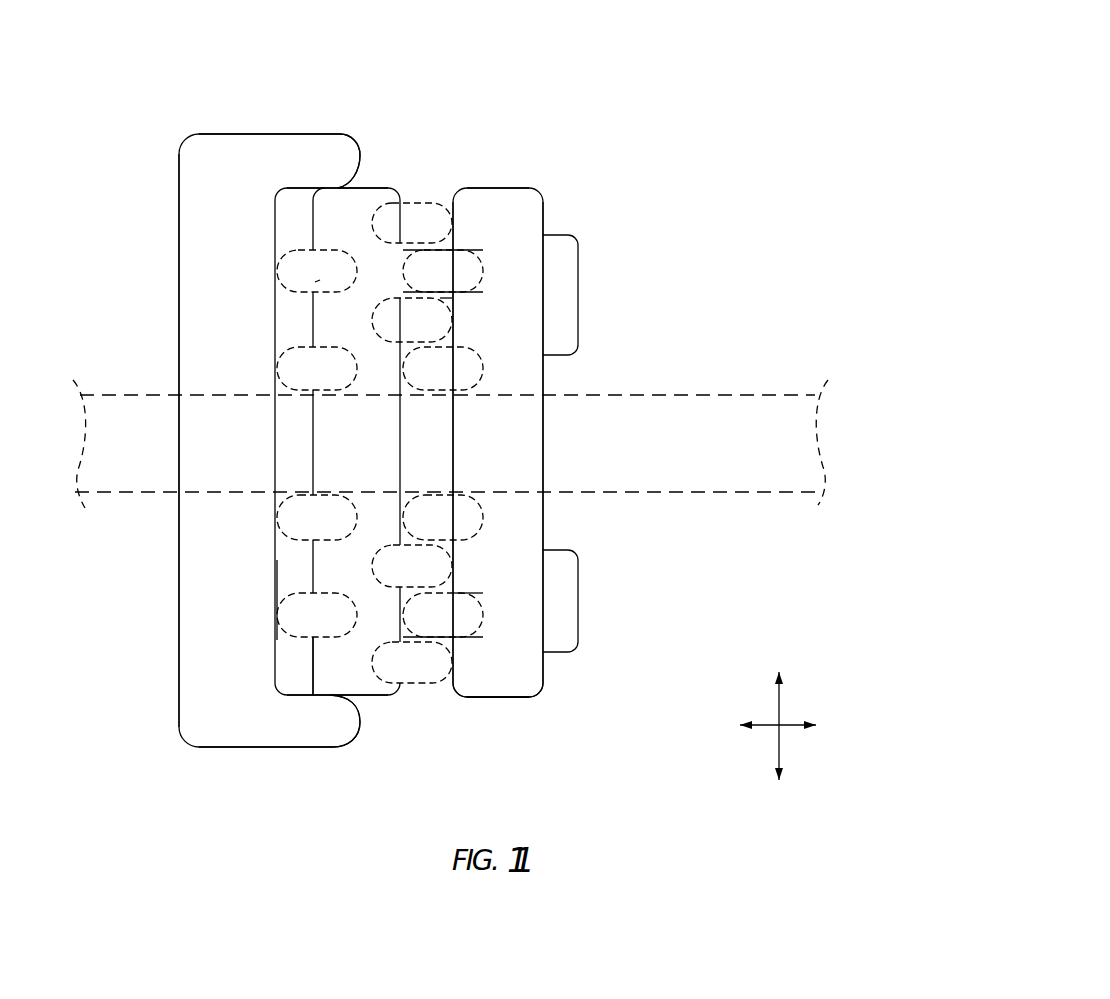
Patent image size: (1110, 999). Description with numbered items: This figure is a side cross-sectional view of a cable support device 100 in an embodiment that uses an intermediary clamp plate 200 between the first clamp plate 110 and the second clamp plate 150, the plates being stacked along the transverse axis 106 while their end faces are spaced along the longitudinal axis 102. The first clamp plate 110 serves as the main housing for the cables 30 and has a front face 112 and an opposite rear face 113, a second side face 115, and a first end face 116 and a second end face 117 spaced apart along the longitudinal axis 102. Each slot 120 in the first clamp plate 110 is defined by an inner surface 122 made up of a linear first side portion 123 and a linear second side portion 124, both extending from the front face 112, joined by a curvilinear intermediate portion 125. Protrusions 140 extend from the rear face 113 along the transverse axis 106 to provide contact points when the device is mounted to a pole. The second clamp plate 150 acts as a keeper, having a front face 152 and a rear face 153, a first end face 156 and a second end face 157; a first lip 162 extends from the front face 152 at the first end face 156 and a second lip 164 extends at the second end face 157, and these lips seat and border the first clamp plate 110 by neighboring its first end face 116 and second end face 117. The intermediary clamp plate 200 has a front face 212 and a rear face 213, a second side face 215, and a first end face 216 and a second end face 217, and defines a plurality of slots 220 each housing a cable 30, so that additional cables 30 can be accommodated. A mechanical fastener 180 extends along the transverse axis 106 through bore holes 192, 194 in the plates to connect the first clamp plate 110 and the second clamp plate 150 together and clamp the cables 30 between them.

The cable support device 100 is at (597, 42).
The first clamp plate 110 is at (535, 178).
The front face 112 is at (443, 297).
The rear face 113 is at (543, 215).
The second side face 115 is at (508, 663).
The first end face 116 is at (497, 188).
The second end face 117 is at (508, 700).
The slot 120 is at (462, 613).
The inner surface 122 is at (470, 623).
The first side portion 123 is at (482, 232).
The second side portion 124 is at (462, 290).
The intermediate portion 125 is at (480, 252).
The protrusion 140 is at (565, 338).
The second clamp plate 150 is at (150, 160).
The front face 152 is at (278, 563).
The rear face 153 is at (179, 648).
The first end face 156 is at (237, 134).
The second end face 157 is at (213, 747).
The first lip 162 is at (278, 165).
The second lip 164 is at (312, 727).
The mechanical fastener 180 is at (110, 488).
The bore hole 192 is at (527, 442).
The bore hole 194 is at (225, 425).
The intermediary clamp plate 200 is at (359, 427).
The front face 212 is at (312, 432).
The rear face 213 is at (402, 468).
The second side face 215 is at (327, 677).
The first end face 216 is at (361, 188).
The second end face 217 is at (365, 700).
The slot 220 is at (318, 280).
The cable 30 is at (292, 265).
The longitudinal axis 102 is at (778, 693).
The transverse axis 106 is at (740, 730).